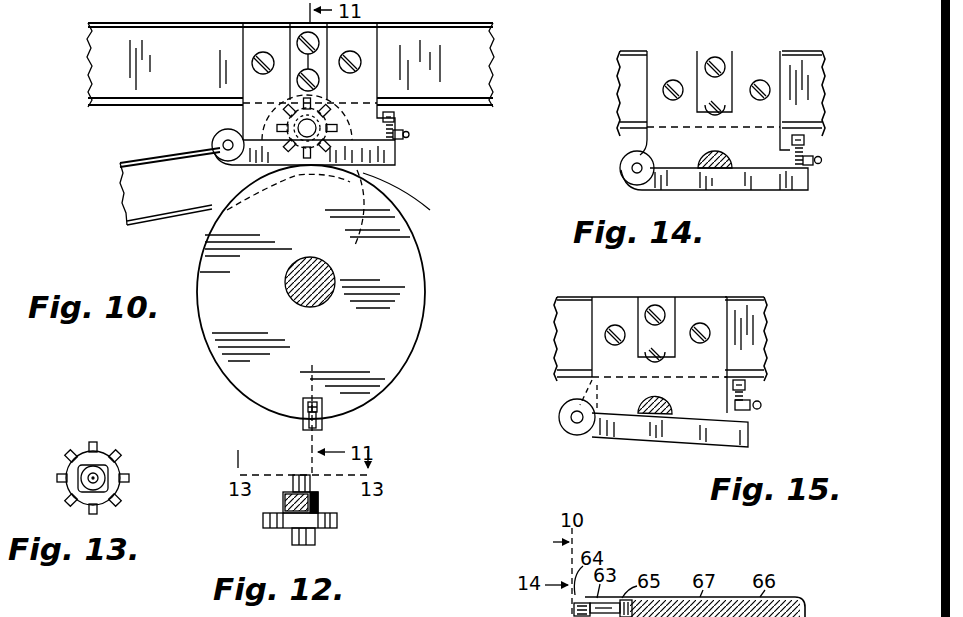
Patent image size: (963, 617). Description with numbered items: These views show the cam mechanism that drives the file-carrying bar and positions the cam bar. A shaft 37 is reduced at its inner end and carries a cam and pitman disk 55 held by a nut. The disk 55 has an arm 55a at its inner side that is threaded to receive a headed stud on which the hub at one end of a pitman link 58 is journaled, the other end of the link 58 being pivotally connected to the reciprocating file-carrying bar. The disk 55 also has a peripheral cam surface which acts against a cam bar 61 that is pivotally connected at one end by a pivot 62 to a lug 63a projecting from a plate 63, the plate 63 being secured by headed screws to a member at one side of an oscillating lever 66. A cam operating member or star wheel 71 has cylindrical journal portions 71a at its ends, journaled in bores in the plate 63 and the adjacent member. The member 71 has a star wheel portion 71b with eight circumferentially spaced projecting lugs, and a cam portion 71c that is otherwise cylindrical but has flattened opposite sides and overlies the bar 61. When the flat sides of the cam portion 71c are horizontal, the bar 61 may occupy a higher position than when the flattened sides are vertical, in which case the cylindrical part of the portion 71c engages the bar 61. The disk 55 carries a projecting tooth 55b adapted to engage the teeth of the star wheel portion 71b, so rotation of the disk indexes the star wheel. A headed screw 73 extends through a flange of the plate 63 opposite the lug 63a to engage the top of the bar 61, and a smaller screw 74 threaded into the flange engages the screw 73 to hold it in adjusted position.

In FIG. 10, the shaft 37 is at (310, 307).
In FIG. 10, the cam and pitman disk 55 is at (425, 255).
In FIG. 10, the arm 55a is at (430, 210).
In FIG. 10, the projecting tooth 55b is at (322, 426).
In FIG. 10, the pitman link 58 is at (140, 172).
In FIG. 10, the cam bar 61 is at (382, 168).
In FIG. 14, the cam bar 61 is at (735, 188).
In FIG. 15, the cam bar 61 is at (648, 440).
In FIG. 15, the pivot 62 is at (577, 423).
In FIG. 15, the plate 63 is at (690, 315).
In FIG. 15, the lug 63a is at (574, 410).
In FIG. 10, the oscillating lever 66 is at (165, 42).
In FIG. 14, the oscillating lever 66 is at (473, 88).
In FIG. 13, the cam operating member or star wheel 71 is at (112, 512).
In FIG. 10, the cylindrical journal portions 71a is at (292, 111).
In FIG. 12, the cylindrical journal portions 71a is at (300, 474).
In FIG. 10, the star wheel portion 71b is at (330, 116).
In FIG. 13, the star wheel portion 71b is at (143, 403).
In FIG. 12, the star wheel portion 71b is at (337, 522).
In FIG. 13, the cam portion 71c is at (103, 482).
In FIG. 12, the cam portion 71c is at (318, 503).
In FIG. 14, the cam portion 71c is at (699, 153).
In FIG. 15, the cam portion 71c is at (672, 395).
In FIG. 14, the headed screw 73 is at (805, 140).
In FIG. 15, the headed screw 73 is at (745, 385).
In FIG. 14, the smaller screw 74 is at (821, 160).
In FIG. 15, the smaller screw 74 is at (765, 405).